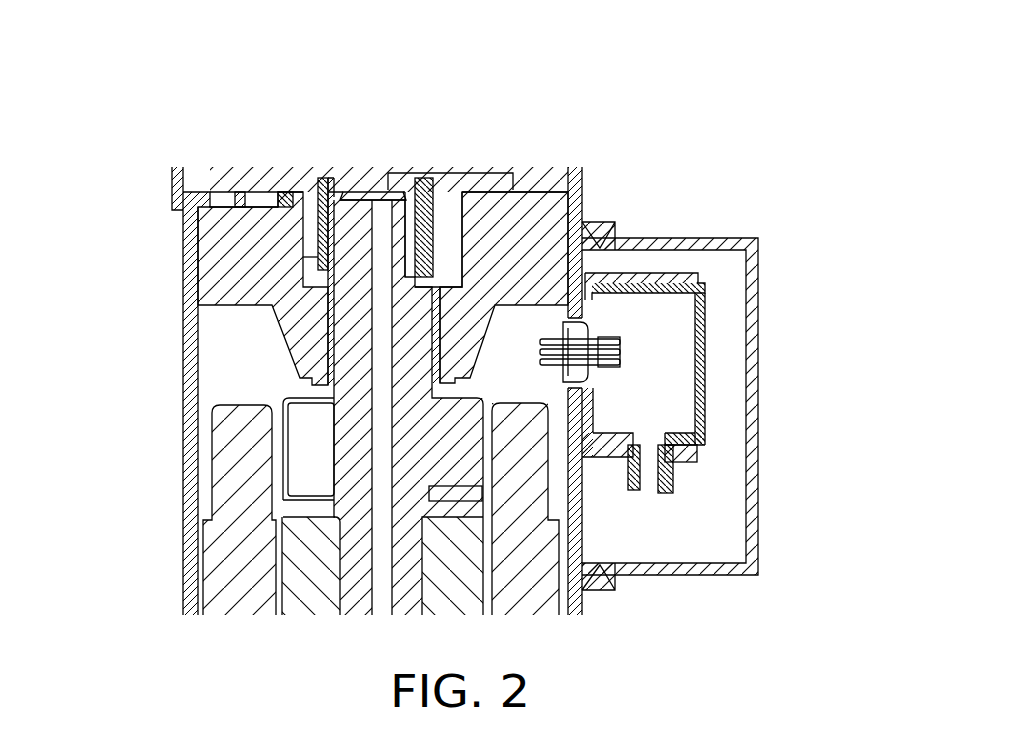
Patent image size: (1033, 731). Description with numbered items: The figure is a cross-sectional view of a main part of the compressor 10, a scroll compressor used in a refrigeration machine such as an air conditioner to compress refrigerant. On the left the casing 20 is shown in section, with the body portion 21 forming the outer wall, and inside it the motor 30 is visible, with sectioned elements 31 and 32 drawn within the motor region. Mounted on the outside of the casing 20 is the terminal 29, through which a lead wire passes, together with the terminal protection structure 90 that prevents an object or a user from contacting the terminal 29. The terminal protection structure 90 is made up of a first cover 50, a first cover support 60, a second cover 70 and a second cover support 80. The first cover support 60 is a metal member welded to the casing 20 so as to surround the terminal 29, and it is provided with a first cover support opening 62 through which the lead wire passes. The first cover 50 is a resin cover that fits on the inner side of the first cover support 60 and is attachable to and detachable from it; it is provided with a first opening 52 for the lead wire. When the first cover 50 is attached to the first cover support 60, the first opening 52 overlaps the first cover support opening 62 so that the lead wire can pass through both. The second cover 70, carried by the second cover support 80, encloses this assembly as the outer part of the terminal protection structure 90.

The compressor 10 is at (250, 112).
The casing 20 is at (383, 276).
The body portion 21 is at (183, 355).
The terminal 29 is at (620, 352).
The motor 30 is at (122, 492).
The outer ring 31 is at (250, 510).
The inner ring 32 is at (300, 573).
The first cover 50 is at (753, 333).
The first opening 52 is at (670, 497).
The first cover support 60 is at (665, 273).
The first cover support opening 62 is at (640, 452).
The second cover 70 is at (724, 238).
The second cover support 80 is at (593, 225).
The terminal protection structure 90 is at (715, 87).